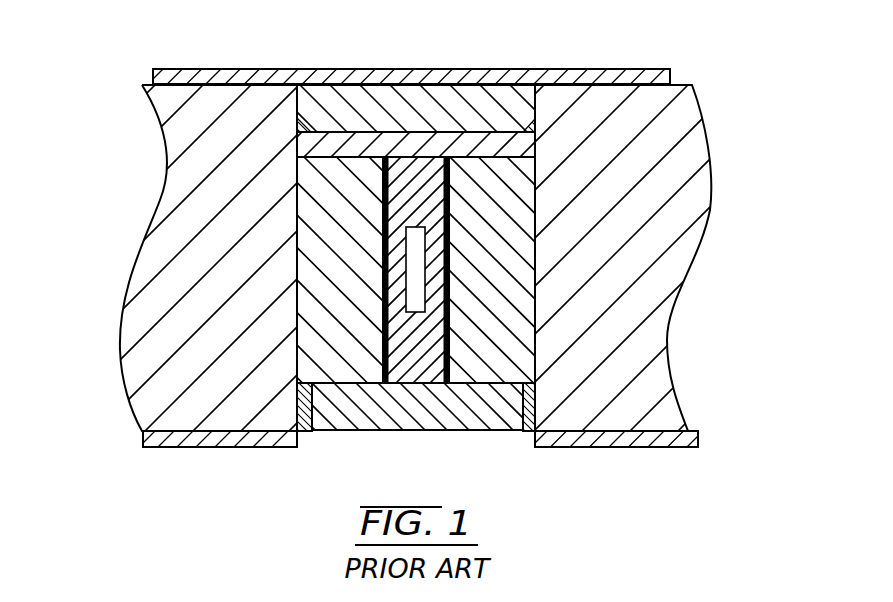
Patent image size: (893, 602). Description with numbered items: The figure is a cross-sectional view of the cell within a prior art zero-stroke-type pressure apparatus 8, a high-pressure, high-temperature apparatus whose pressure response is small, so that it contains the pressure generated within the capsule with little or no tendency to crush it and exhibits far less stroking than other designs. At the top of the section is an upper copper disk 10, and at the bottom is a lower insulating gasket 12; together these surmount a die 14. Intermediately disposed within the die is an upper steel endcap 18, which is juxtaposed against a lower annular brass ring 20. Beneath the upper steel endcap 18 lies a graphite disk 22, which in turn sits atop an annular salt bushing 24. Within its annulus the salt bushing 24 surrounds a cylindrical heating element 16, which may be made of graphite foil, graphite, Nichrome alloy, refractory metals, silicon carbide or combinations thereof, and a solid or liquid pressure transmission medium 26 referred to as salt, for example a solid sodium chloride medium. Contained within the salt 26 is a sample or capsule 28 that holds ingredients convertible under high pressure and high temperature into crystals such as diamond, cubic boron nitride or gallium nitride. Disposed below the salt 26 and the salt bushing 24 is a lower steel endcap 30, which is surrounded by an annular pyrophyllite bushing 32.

The zero-stroke-type pressure apparatus 8 is at (740, 98).
The upper copper disk 10 is at (585, 70).
The lower insulating gasket 12 is at (190, 448).
The die 14 is at (120, 350).
The cylindrical heating element 16 is at (449, 329).
The upper steel endcap 18 is at (410, 95).
The lower annular brass ring 20 is at (529, 125).
The graphite disk 22 is at (362, 147).
The annular salt bushing 24 is at (494, 248).
The pressure transmission medium 26 is at (398, 207).
The capsule 28 is at (413, 272).
The lower steel endcap 30 is at (412, 431).
The annular pyrophyllite bushing 32 is at (305, 432).